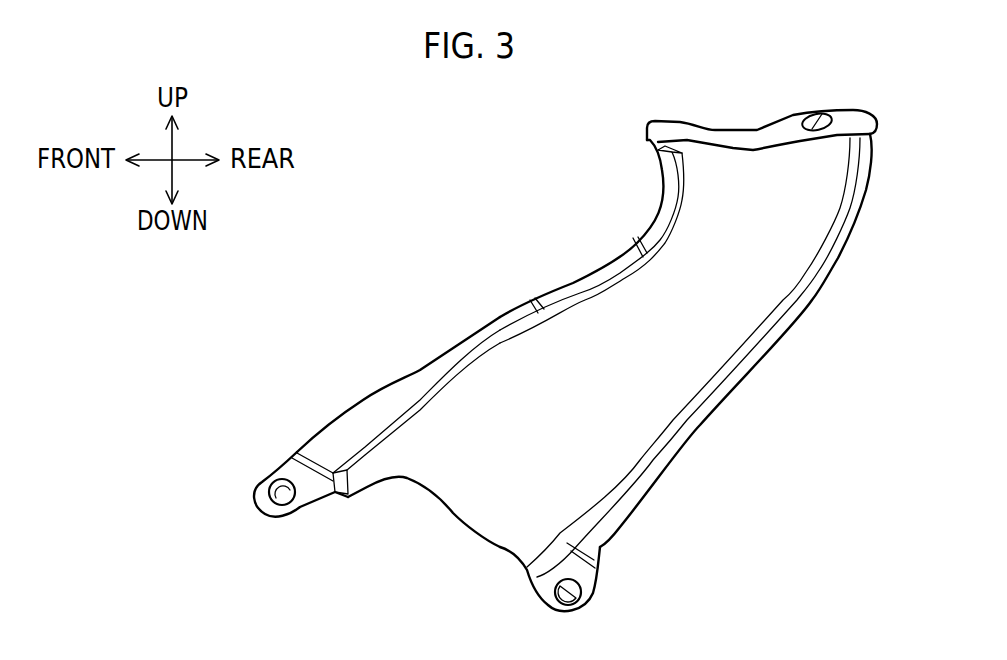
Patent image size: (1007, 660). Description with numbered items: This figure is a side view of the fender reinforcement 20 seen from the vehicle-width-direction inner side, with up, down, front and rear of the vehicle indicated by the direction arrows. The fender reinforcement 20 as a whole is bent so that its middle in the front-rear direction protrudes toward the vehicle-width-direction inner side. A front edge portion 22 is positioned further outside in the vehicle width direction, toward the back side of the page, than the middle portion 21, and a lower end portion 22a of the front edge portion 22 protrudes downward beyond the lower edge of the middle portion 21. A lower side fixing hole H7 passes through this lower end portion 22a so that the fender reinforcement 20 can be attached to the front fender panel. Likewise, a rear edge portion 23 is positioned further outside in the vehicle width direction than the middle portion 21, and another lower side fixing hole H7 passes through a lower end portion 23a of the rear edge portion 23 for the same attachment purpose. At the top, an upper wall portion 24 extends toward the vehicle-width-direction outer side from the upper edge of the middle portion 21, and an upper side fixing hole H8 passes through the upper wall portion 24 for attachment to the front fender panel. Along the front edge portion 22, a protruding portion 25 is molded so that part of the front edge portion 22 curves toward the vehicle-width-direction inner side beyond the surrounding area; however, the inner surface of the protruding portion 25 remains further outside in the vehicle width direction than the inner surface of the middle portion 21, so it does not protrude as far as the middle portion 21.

The fender reinforcement 20 is at (452, 232).
The middle portion 21 is at (710, 297).
The front edge portion 22 is at (423, 368).
The lower end portion 22a is at (265, 477).
The rear edge portion 23 is at (733, 385).
The lower end portion 23a is at (597, 593).
The upper wall portion 24 is at (708, 125).
The protruding portion 25 is at (570, 283).
The lower side fixing hole H7 is at (293, 507).
The upper side fixing hole H8 is at (813, 112).